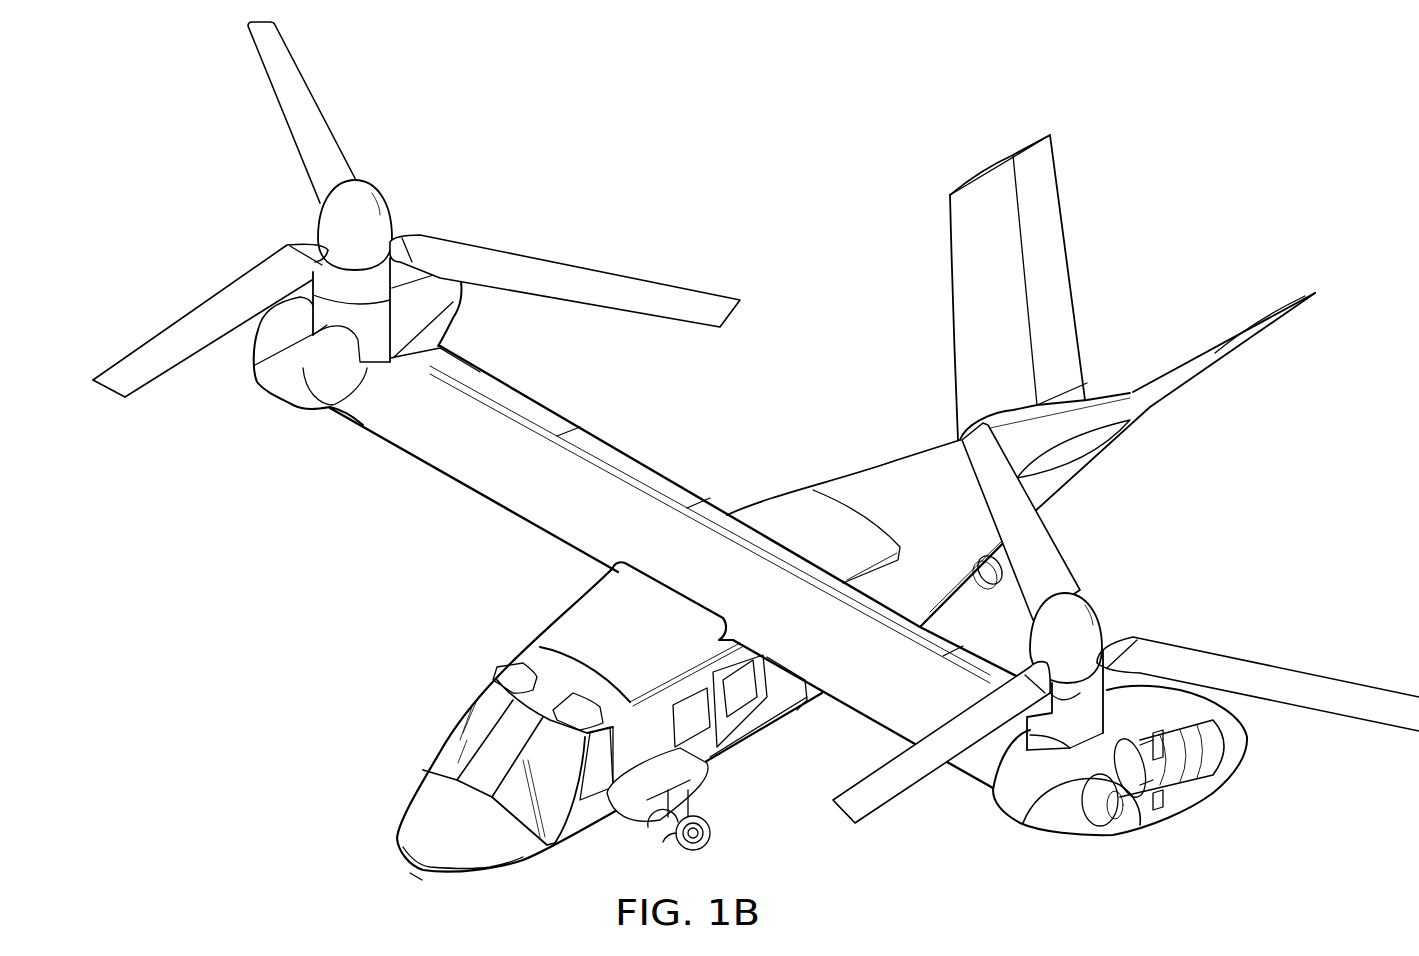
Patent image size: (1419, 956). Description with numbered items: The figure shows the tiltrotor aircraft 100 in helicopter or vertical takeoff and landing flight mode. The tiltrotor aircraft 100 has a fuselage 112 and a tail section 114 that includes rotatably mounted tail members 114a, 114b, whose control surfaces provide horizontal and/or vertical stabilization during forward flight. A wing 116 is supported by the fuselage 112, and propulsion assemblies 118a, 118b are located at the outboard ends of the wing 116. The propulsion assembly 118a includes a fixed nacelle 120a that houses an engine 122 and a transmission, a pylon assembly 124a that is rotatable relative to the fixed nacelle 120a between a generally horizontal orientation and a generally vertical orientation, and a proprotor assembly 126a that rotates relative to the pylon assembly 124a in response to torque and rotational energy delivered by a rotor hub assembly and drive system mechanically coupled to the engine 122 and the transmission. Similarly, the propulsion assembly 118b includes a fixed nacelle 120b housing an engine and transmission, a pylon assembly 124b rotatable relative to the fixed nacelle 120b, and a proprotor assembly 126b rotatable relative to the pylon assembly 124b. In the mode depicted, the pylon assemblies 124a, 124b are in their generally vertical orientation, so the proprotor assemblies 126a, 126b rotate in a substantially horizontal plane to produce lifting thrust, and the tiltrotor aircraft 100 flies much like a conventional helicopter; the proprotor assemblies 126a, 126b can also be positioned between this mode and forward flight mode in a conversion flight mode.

The tiltrotor aircraft 100 is at (321, 626).
The fuselage 112 is at (897, 472).
The tail section 114 is at (920, 250).
The tail member 114a is at (1188, 387).
The tail member 114b is at (983, 163).
The wing 116 is at (500, 476).
The propulsion assembly 118a is at (1040, 835).
The propulsion assembly 118b is at (275, 395).
The fixed nacelle 120a is at (1250, 748).
The fixed nacelle 120b is at (457, 316).
The engine 122 is at (1183, 787).
The pylon assembly 124a is at (993, 752).
The pylon assembly 124b is at (330, 308).
The proprotor assembly 126a is at (1302, 675).
The proprotor assembly 126b is at (308, 103).